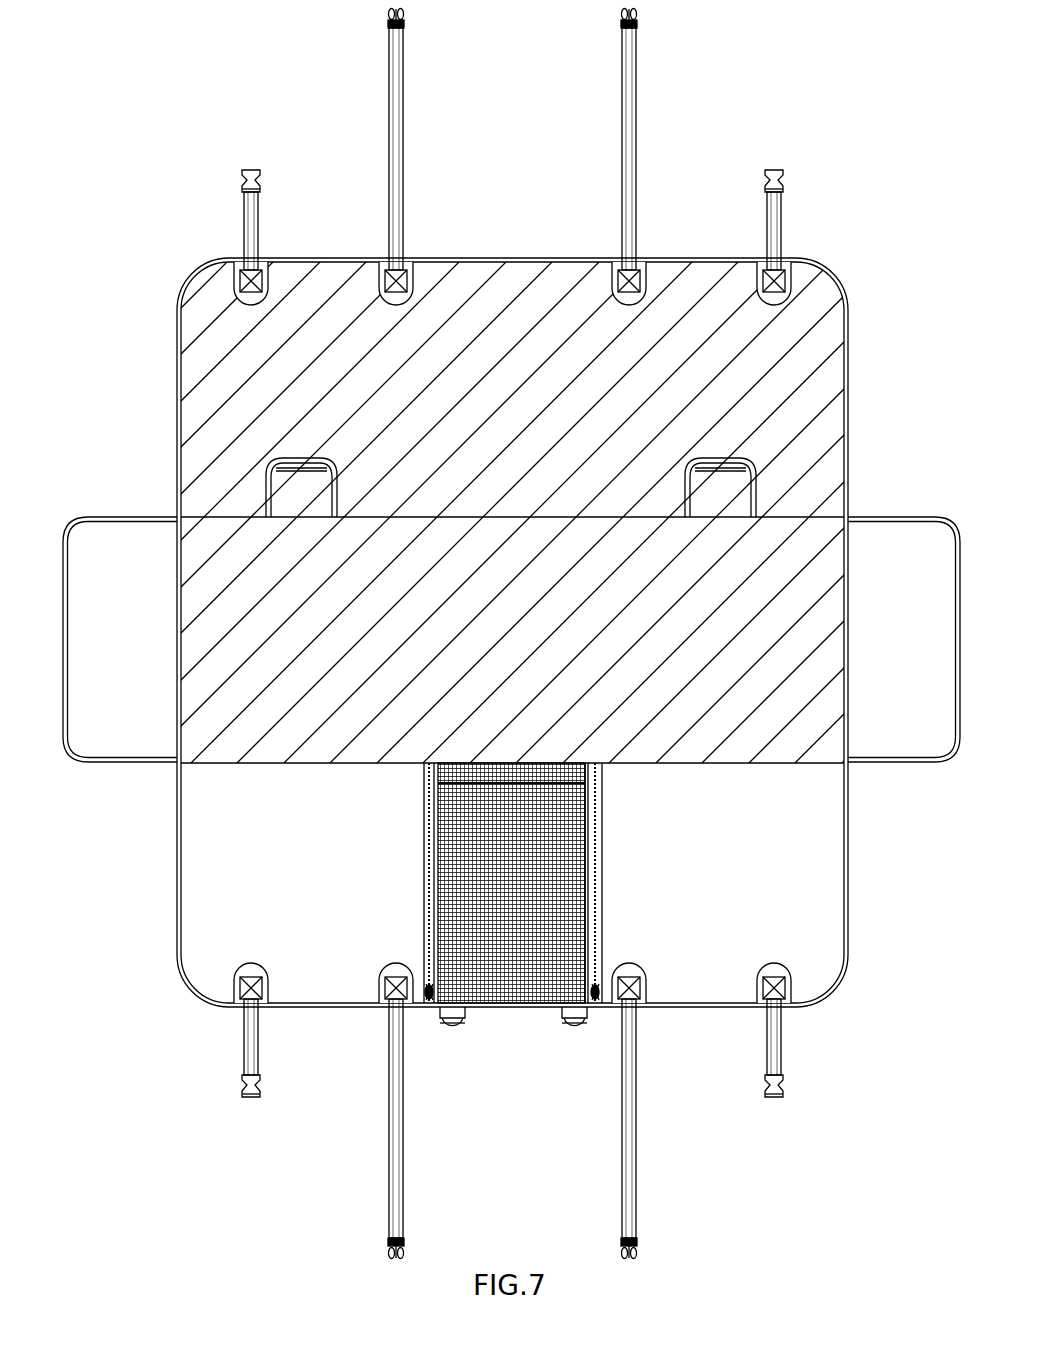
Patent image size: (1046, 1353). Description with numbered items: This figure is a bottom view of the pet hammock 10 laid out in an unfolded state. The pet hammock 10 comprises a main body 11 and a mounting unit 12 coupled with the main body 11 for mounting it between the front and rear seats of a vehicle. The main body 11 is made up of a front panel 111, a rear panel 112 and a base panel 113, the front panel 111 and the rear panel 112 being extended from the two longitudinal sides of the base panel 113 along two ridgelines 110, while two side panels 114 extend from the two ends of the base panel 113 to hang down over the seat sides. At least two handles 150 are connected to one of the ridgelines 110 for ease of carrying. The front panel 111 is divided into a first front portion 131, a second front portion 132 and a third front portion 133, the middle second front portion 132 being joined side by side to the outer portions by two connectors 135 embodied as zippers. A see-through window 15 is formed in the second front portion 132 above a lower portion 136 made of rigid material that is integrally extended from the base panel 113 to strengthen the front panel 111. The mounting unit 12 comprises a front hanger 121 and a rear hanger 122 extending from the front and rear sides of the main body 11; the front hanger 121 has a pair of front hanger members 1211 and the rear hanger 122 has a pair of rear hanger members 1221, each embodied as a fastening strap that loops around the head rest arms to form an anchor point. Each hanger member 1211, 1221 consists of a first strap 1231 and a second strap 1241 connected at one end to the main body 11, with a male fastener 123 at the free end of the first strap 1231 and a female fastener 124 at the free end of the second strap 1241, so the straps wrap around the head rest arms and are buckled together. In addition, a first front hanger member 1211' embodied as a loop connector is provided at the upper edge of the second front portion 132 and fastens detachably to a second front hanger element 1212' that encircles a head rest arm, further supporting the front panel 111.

The pet hammock 10 is at (168, 86).
The main body 11 is at (163, 256).
The mounting unit 12 is at (138, 118).
The window 15 is at (472, 1005).
The ridgeline 110 is at (730, 515).
The front panel 111 is at (208, 830).
The rear panel 112 is at (250, 380).
The base panel 113 is at (262, 550).
The side panel 114 is at (153, 562).
The front hanger 121 is at (178, 1199).
The rear hanger 122 is at (156, 158).
The male fastener 123 is at (396, 1180).
The female fastener 124 is at (245, 190).
The first front portion 131 is at (805, 923).
The second front portion 132 is at (498, 1005).
The third front portion 133 is at (218, 933).
The connector 135 is at (425, 1003).
The lower portion 136 is at (548, 1005).
The handle 150 is at (715, 465).
The front hanger member 1211 is at (192, 1080).
The first front hanger member 1211' is at (383, 1061).
The second front hanger element 1212' is at (644, 1049).
The rear hanger member 1221 is at (153, 203).
The first strap 1231 is at (397, 82).
The second strap 1241 is at (250, 238).